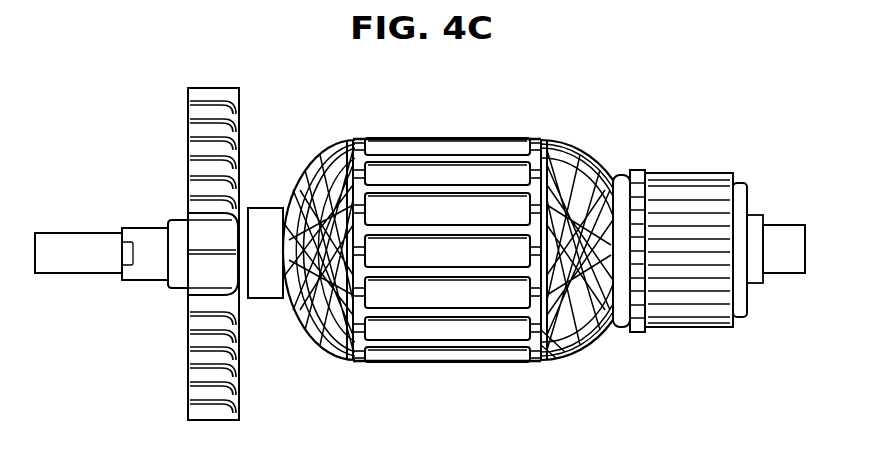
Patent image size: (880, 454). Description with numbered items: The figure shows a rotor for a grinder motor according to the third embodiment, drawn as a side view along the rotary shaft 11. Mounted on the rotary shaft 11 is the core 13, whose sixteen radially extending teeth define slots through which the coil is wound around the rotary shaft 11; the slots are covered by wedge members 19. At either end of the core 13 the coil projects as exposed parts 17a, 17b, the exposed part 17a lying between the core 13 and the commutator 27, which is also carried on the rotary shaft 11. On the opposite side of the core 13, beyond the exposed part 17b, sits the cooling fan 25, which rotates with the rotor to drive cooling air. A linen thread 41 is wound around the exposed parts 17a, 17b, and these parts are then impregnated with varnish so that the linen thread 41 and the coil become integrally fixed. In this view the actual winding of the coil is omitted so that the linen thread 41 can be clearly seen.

The rotary shaft 11 is at (85, 260).
The core 13 is at (440, 145).
The exposed part of coil 17a is at (620, 121).
The exposed part of coil 17b is at (367, 121).
The wedge member 19 is at (545, 343).
The cooling fan 25 is at (203, 157).
The commutator 27 is at (678, 173).
The linen thread 41 is at (323, 350).